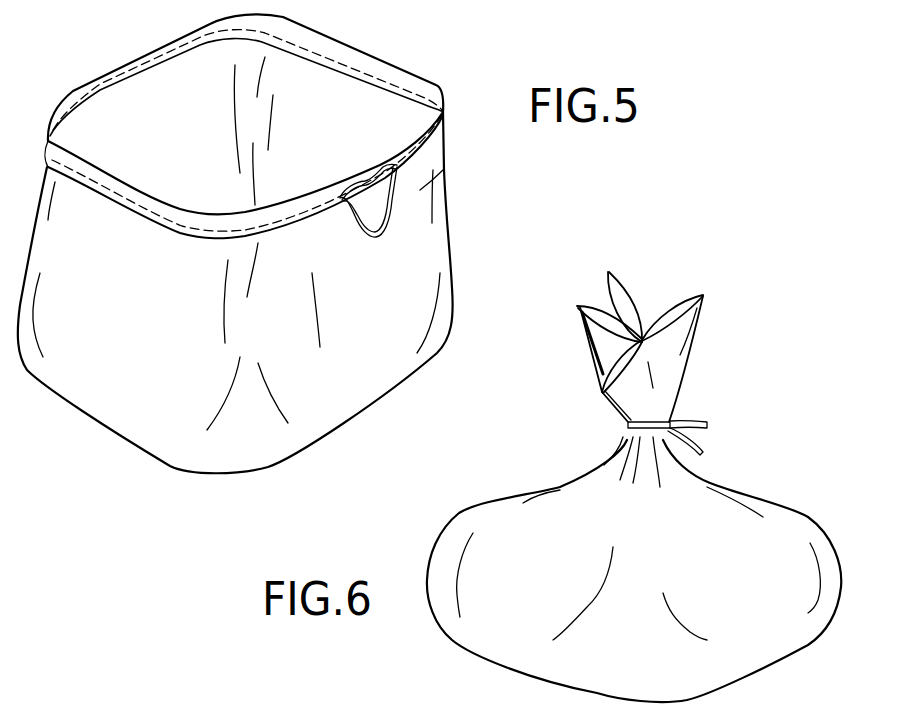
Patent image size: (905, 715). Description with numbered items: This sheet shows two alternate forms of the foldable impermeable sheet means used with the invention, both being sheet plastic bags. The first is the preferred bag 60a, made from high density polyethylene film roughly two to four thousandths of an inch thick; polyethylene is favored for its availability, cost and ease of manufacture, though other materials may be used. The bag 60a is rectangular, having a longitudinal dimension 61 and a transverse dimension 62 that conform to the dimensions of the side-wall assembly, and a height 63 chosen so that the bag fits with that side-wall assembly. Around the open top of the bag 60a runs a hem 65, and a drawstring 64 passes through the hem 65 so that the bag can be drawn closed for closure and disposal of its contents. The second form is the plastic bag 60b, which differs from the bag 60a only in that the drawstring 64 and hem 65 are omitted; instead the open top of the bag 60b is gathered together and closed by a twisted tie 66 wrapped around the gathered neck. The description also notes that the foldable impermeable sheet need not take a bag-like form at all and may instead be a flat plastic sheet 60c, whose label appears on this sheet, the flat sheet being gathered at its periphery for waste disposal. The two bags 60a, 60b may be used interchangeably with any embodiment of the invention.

In FIG. 5, the bag 60a is at (235, 245).
In FIG. 6, the plastic bag 60b is at (634, 487).
In FIG. 6, the flat plastic sheet 60c is at (250, 700).
In FIG. 5, the longitudinal dimension 61 is at (471, 196).
In FIG. 5, the transverse dimension 62 is at (239, 131).
In FIG. 5, the height 63 is at (479, 293).
In FIG. 5, the drawstring 64 is at (446, 170).
In FIG. 5, the hem 65 is at (173, 233).
In FIG. 6, the twisted tie 66 is at (705, 433).